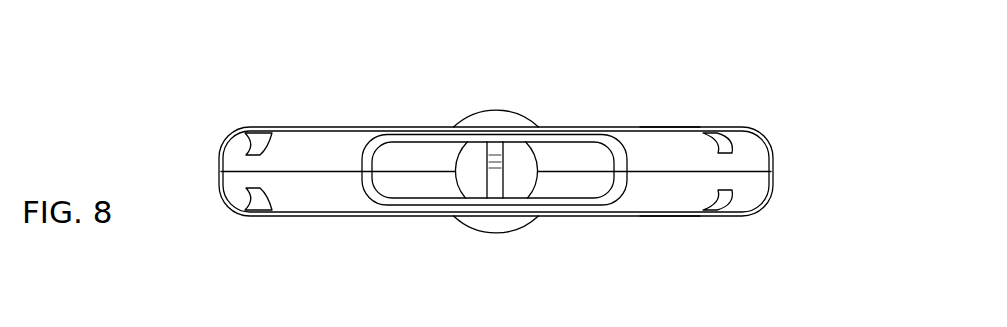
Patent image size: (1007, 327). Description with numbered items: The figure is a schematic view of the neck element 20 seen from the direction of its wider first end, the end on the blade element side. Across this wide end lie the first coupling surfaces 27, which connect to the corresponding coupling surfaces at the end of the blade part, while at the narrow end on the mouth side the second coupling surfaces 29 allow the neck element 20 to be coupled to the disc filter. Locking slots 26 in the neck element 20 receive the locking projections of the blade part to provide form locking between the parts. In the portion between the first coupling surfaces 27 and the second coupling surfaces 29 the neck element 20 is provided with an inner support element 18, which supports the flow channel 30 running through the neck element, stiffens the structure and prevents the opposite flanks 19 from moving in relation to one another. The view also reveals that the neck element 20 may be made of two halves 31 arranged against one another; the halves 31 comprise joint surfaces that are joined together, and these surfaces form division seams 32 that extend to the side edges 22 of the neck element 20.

The neck element 20 is at (762, 70).
The opposite flanks 19 is at (293, 127).
The side edges 22 is at (210, 180).
The halves 31 is at (667, 110).
The locking slots 26 is at (253, 141).
The division seams 32 is at (740, 172).
The first coupling surfaces 27 is at (367, 187).
The second coupling surfaces 29 is at (488, 105).
The flow channel 30 is at (470, 153).
The support element 18 is at (500, 156).